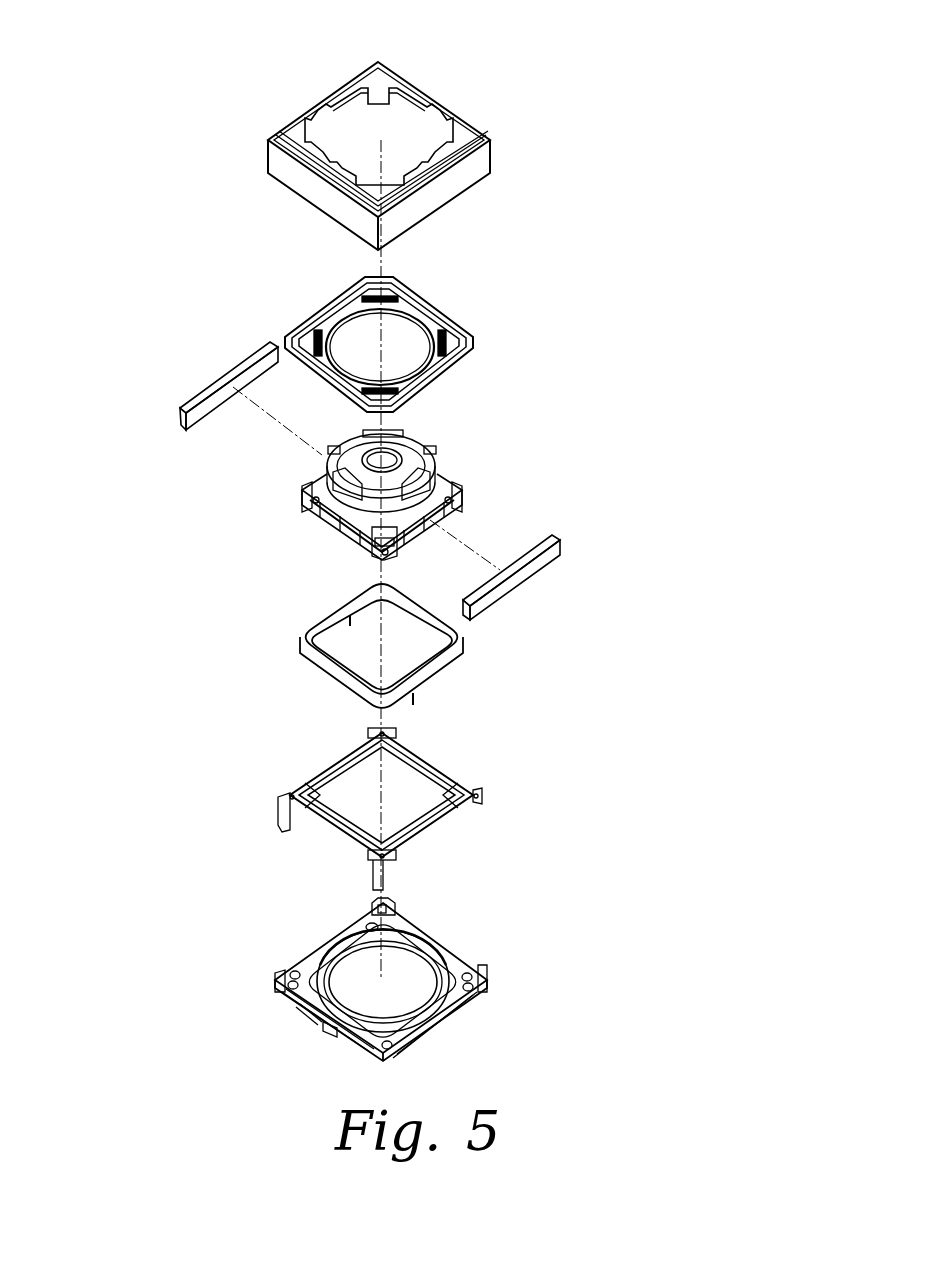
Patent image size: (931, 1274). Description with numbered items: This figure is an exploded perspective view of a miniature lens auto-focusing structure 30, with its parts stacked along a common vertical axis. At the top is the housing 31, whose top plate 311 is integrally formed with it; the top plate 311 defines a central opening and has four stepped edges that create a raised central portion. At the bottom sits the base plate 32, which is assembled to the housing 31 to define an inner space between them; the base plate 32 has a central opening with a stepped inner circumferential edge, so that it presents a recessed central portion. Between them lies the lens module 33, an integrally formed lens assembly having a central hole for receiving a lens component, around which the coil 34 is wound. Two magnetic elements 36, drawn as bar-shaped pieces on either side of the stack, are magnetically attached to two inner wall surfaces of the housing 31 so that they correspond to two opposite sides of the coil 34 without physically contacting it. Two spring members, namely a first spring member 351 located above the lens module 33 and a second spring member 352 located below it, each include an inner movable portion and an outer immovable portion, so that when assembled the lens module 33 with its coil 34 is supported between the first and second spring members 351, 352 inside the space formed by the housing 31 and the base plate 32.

The miniature lens auto-focusing structure 30 is at (177, 254).
The housing 31 is at (329, 198).
The top plate 311 is at (378, 73).
The base plate 32 is at (325, 955).
The lens module 33 is at (440, 468).
The coil 34 is at (325, 680).
The first spring member 351 is at (485, 333).
The second spring member 352 is at (478, 772).
The magnetic element 36 is at (247, 362).